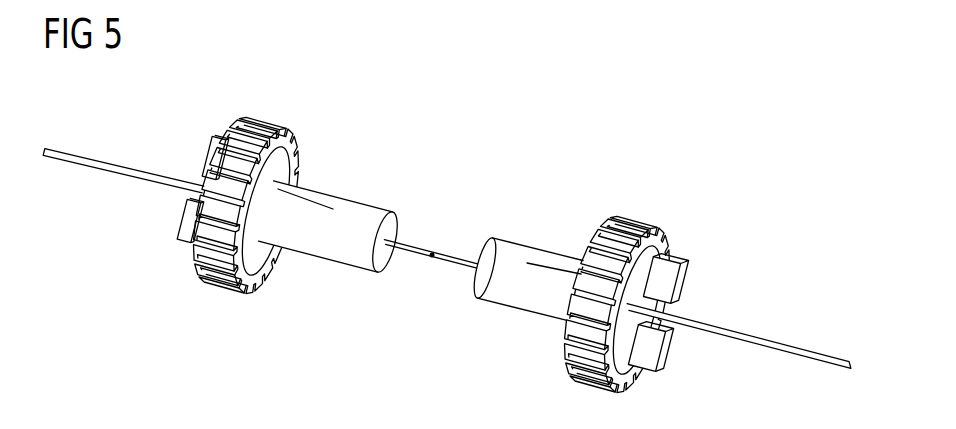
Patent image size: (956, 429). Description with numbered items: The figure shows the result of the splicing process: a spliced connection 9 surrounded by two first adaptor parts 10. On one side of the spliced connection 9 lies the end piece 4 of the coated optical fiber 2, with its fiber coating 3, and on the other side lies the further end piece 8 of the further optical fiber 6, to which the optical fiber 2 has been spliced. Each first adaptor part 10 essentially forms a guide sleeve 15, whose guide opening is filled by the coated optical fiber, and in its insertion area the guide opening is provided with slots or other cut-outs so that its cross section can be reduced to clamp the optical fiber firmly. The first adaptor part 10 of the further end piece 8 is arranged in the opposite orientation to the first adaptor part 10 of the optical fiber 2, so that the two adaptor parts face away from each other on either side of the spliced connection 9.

The optical fiber 2 is at (739, 325).
The fiber coating 3 is at (768, 342).
The end piece 4 is at (434, 259).
The further optical fiber 6 is at (92, 163).
The further end piece 8 is at (398, 252).
The spliced connection 9 is at (433, 252).
The first adaptor part 10 is at (418, 236).
The guide sleeve 15 is at (418, 236).